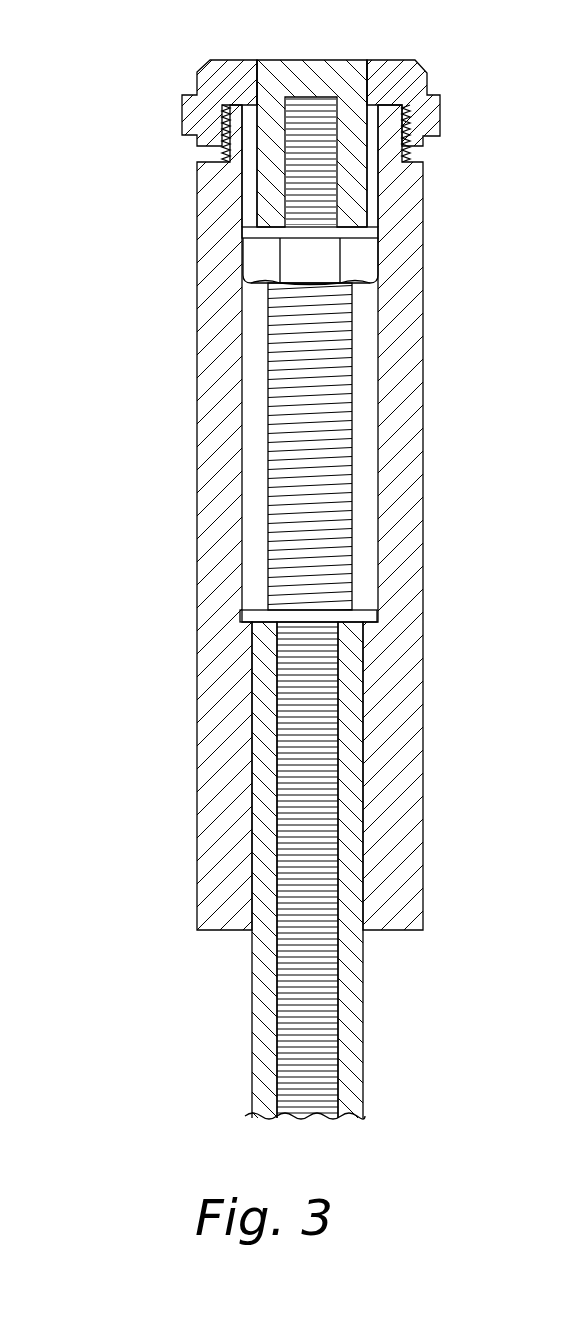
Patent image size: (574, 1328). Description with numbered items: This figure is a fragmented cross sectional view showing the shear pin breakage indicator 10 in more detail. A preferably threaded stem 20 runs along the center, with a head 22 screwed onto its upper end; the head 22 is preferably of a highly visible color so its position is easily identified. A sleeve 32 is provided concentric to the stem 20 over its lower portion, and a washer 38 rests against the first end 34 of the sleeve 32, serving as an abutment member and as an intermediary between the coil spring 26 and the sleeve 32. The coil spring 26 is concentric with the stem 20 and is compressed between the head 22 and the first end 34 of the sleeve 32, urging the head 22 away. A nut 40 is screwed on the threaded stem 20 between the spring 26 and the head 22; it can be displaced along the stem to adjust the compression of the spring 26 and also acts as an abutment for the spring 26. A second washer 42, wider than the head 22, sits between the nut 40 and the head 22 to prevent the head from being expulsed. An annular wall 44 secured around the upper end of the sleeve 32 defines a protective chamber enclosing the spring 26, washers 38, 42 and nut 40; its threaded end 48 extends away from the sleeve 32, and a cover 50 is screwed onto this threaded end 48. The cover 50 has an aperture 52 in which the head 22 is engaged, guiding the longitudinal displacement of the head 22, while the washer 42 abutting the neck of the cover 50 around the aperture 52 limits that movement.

The indicator 10 is at (160, 836).
The stem 20 is at (307, 1015).
The head 22 is at (342, 67).
The coil spring 26 is at (308, 412).
The sleeve 32 is at (374, 1079).
The first end 34 is at (355, 630).
The washer 38 is at (355, 613).
The nut 40 is at (295, 260).
The second washer 42 is at (383, 231).
The annular wall 44 is at (215, 520).
The threaded end 48 is at (235, 123).
The cover 50 is at (197, 73).
The aperture 52 is at (258, 74).